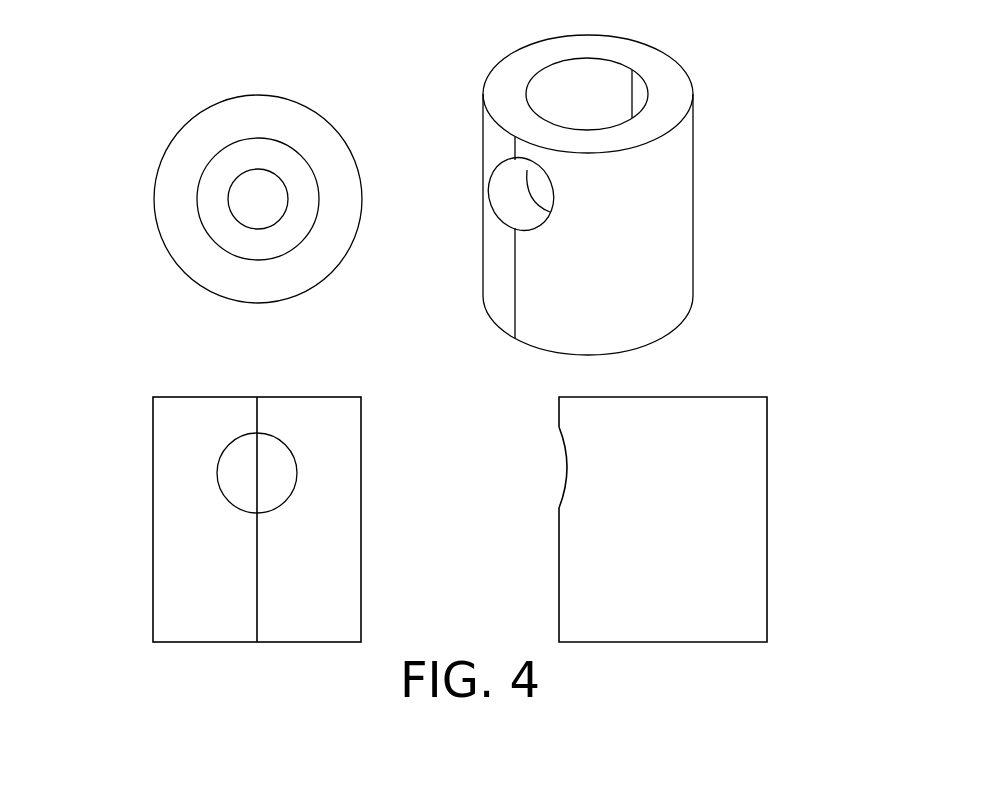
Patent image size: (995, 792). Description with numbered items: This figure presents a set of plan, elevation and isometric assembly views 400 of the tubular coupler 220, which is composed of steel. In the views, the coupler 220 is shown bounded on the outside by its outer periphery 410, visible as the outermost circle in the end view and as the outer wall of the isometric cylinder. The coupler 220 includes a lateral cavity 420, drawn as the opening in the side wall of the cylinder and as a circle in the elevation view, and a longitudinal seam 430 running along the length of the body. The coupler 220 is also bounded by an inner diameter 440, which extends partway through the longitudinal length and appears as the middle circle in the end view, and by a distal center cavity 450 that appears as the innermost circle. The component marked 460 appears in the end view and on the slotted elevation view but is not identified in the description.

The assembly views 400 is at (112, 102).
The outer periphery 410 is at (336, 117).
The lateral cavity 420 is at (492, 205).
The longitudinal seam 430 is at (513, 303).
The inner diameter 440 is at (305, 250).
The distal center cavity 450 is at (233, 225).
The inner insert 460 is at (279, 131).
The tubular coupler 220 is at (738, 40).